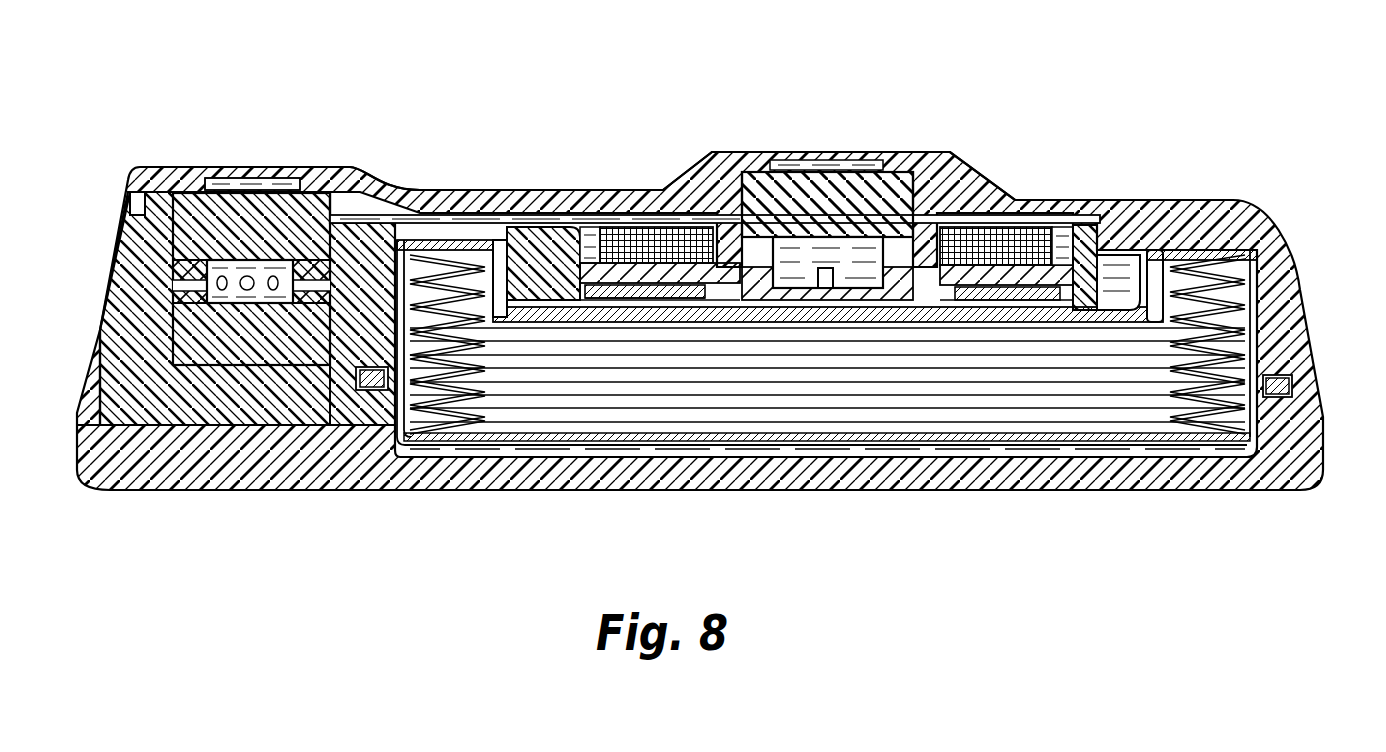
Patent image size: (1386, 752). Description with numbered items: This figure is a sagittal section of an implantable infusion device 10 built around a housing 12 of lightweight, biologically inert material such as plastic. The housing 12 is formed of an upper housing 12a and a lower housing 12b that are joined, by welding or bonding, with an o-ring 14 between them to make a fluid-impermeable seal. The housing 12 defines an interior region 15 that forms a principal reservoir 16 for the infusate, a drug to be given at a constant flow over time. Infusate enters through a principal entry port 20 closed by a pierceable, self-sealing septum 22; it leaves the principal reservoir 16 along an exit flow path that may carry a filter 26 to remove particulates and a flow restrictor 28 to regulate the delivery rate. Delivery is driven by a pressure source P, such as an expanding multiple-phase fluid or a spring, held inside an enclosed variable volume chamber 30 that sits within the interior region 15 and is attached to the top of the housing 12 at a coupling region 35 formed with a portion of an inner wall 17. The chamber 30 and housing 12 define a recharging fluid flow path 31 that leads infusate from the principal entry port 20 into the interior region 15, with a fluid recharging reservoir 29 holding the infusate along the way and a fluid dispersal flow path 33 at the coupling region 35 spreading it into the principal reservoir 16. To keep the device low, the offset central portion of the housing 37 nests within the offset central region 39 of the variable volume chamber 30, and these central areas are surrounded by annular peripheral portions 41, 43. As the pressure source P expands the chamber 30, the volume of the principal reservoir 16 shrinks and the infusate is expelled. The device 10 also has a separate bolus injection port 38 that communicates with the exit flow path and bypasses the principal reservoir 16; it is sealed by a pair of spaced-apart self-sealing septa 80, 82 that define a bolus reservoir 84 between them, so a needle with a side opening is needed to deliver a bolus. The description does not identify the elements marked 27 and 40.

The infusion device 10 is at (714, 293).
The housing 12 is at (723, 339).
The upper housing 12a is at (1170, 210).
The lower housing 12b is at (1175, 490).
The o-ring 14 is at (380, 392).
The interior region 15 is at (1245, 350).
The principal reservoir 16 is at (1297, 398).
The inner wall 17 is at (927, 307).
The principal entry port 20 is at (787, 160).
The septum 22 is at (843, 195).
The filter 26 is at (668, 248).
The support 27 is at (550, 313).
The flow restrictor 28 is at (618, 283).
The fluid recharging reservoir 29 is at (803, 250).
The variable volume chamber 30 is at (1240, 300).
The recharging fluid flow path 31 is at (838, 280).
The fluid dispersal flow path 33 is at (620, 300).
The coupling region 35 is at (1033, 312).
The central portion of the housing 37 is at (1085, 303).
The bolus injection port 38 is at (252, 160).
The central region of the variable volume chamber 39 is at (953, 305).
The channel 40 is at (283, 190).
The annular peripheral portion 41 is at (1185, 265).
The annular peripheral portion 43 is at (1230, 305).
The self-sealing septum 80 is at (243, 200).
The self-sealing septum 82 is at (195, 325).
The bolus reservoir 84 is at (177, 258).
The pressure source P is at (1265, 322).